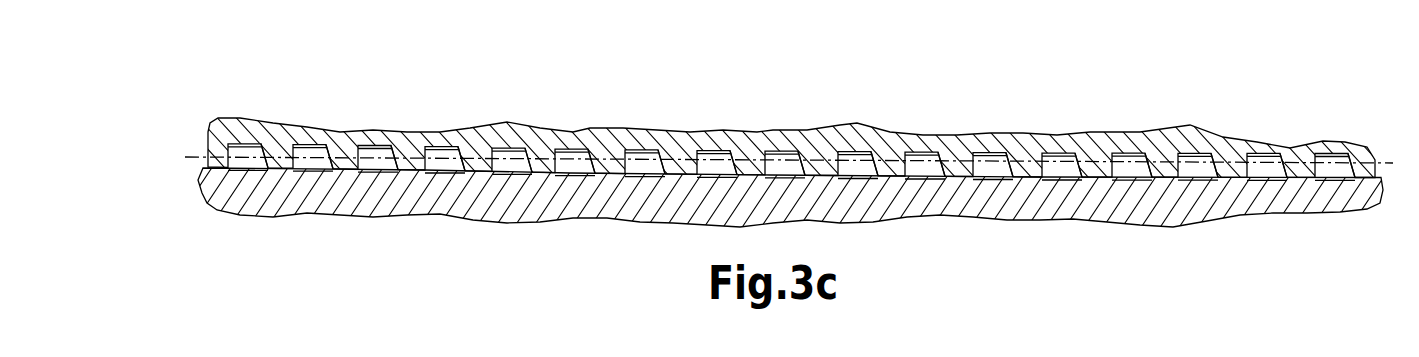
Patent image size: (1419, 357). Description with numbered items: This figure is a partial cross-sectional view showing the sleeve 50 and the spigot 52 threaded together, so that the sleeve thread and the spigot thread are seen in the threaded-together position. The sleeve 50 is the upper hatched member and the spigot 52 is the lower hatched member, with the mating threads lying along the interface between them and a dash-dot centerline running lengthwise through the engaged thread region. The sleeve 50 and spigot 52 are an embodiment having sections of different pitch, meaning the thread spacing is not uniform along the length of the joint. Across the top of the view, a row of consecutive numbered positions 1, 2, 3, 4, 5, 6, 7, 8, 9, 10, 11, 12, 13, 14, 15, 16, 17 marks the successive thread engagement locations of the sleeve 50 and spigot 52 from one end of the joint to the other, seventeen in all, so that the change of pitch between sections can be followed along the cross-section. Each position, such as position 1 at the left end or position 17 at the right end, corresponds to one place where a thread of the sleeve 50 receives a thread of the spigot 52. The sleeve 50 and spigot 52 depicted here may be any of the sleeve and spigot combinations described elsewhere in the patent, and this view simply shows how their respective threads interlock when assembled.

The sleeve 50 is at (211, 136).
The spigot 52 is at (214, 196).
The cavity 1 is at (248, 123).
The cavity 2 is at (313, 124).
The cavity 3 is at (378, 124).
The cavity 4 is at (445, 125).
The cavity 5 is at (512, 125).
The cavity 6 is at (575, 126).
The cavity 7 is at (645, 127).
The cavity 8 is at (717, 127).
The cavity 9 is at (785, 127).
The cavity 10 is at (858, 128).
The cavity 11 is at (925, 128).
The cavity 12 is at (993, 128).
The cavity 13 is at (1062, 128).
The cavity 14 is at (1132, 128).
The cavity 15 is at (1198, 128).
The cavity 16 is at (1267, 128).
The cavity 17 is at (1335, 128).